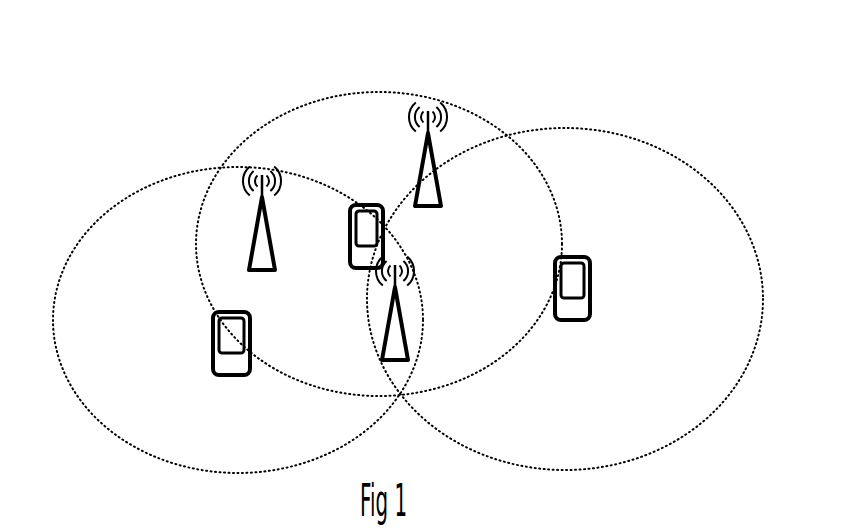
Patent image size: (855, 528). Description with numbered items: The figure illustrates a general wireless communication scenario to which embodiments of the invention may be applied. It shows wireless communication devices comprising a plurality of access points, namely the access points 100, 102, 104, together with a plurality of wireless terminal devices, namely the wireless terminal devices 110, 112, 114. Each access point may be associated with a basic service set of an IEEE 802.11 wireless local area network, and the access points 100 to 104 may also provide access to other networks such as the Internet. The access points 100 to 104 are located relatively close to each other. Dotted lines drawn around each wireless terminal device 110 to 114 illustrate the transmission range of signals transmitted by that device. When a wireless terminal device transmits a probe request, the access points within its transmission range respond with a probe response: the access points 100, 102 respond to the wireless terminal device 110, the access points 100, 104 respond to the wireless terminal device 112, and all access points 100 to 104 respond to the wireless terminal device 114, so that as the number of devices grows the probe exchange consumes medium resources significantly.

The access point 100 is at (383, 334).
The access point 102 is at (250, 240).
The access point 104 is at (418, 178).
The wireless terminal device 110 is at (213, 310).
The wireless terminal device 112 is at (555, 256).
The wireless terminal device 114 is at (350, 207).